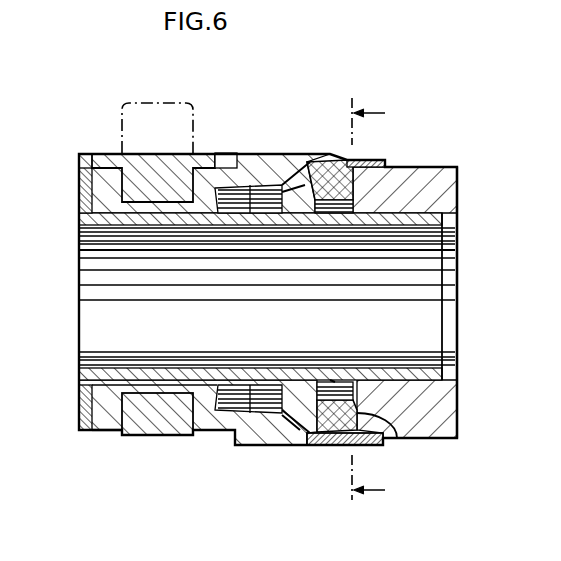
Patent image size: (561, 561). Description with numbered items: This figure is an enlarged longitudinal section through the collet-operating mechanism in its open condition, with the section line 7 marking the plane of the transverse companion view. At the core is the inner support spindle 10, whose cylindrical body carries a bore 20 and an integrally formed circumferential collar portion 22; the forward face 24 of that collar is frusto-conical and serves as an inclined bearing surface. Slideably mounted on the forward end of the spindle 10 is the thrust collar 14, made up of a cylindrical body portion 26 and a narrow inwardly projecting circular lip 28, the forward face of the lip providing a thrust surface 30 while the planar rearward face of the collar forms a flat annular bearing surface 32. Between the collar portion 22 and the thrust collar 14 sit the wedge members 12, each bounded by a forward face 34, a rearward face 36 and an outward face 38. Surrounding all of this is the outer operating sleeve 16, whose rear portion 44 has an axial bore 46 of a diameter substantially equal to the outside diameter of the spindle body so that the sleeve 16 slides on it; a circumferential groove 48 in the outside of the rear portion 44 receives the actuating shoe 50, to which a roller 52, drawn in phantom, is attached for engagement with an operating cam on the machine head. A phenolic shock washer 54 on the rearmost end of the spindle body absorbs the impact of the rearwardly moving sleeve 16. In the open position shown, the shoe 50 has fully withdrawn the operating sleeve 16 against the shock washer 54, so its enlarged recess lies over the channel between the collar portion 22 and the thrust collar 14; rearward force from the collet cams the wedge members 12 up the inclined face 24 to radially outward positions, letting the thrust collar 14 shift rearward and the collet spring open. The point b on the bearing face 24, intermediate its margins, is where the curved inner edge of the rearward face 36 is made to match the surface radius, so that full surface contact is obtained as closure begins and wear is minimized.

The inner support spindle 10 is at (67, 243).
The wedge members 12 is at (362, 192).
The thrust collar 14 is at (470, 418).
The outer operating sleeve 16 is at (106, 434).
The bore 20 is at (97, 372).
The circumferential collar portion 22 is at (283, 190).
The forward face 24 is at (342, 170).
The cylindrical body portion 26 is at (425, 418).
The circular lip 28 is at (455, 377).
The thrust surface 30 is at (455, 213).
The annular bearing surface 32 is at (338, 390).
The forward face 34 is at (387, 432).
The rearward face 36 is at (287, 203).
The outward face 38 is at (320, 434).
The rear portion 44 is at (208, 187).
The axial bore 46 is at (158, 378).
The circumferential groove 48 is at (133, 163).
The actuating shoe 50 is at (165, 436).
The roller 52 is at (143, 102).
The phenolic shock washer 54 is at (79, 186).
The point on bearing surface b is at (332, 383).
The section line 7- 7 is at (382, 304).